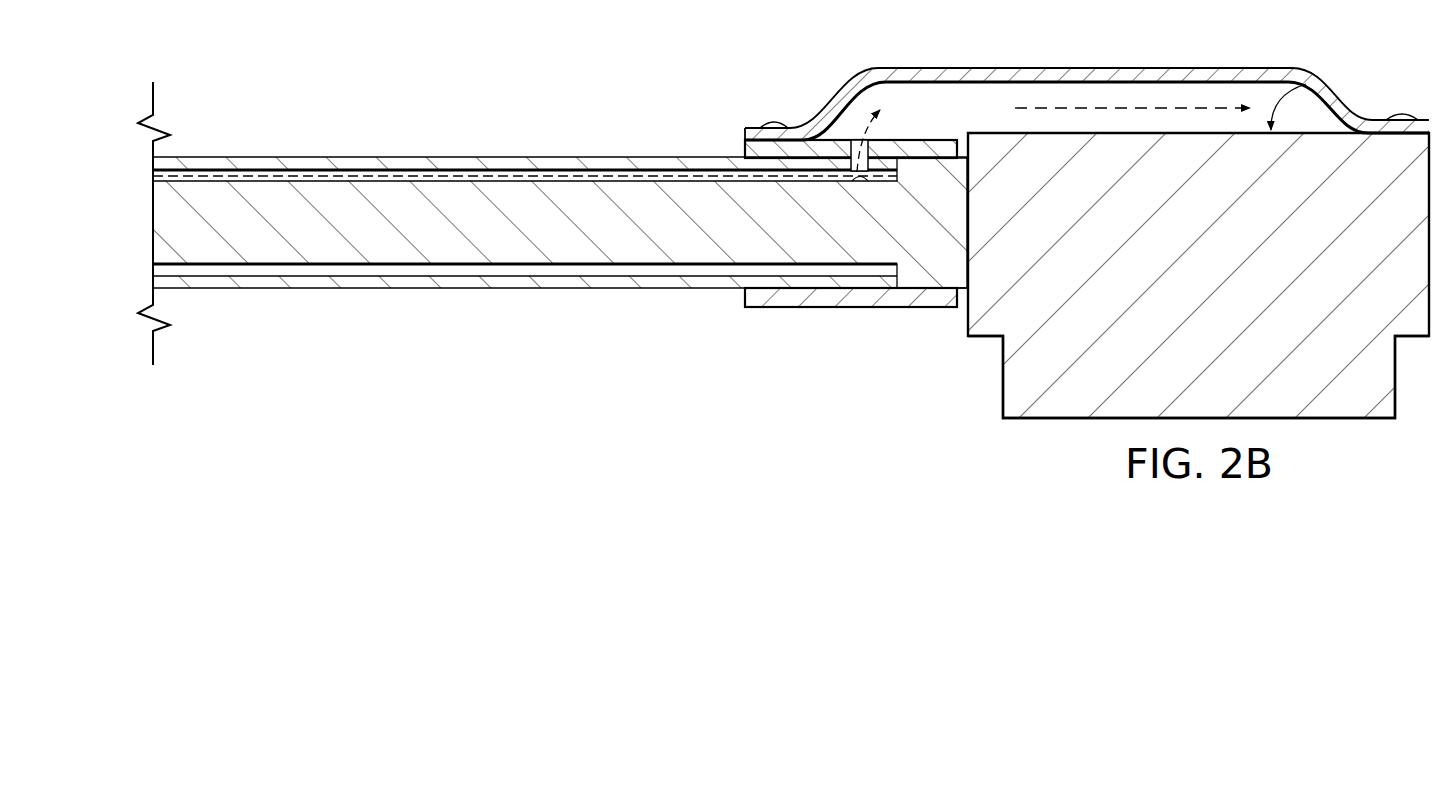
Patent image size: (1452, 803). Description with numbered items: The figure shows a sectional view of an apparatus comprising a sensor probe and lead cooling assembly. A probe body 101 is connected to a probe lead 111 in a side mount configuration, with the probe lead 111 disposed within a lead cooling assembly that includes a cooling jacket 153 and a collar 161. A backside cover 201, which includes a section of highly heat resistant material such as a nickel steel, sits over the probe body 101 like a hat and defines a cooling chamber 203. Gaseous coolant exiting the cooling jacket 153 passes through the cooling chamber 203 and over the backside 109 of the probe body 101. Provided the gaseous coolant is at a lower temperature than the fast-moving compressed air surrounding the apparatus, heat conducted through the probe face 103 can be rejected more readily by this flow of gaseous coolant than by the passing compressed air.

The probe body 101 is at (1221, 250).
The probe face 103 is at (1337, 421).
The backside 109 is at (1309, 79).
The probe lead 111 is at (596, 236).
The cooling jacket 153 is at (508, 156).
The collar 161 is at (817, 309).
The backside cover 201 is at (1081, 66).
The cooling chamber 203 is at (968, 90).